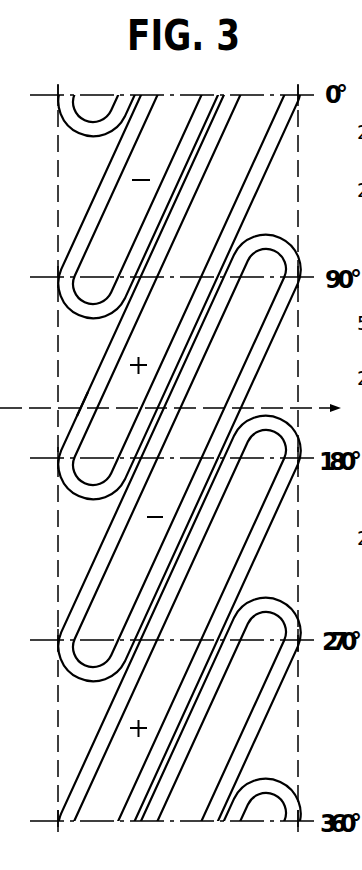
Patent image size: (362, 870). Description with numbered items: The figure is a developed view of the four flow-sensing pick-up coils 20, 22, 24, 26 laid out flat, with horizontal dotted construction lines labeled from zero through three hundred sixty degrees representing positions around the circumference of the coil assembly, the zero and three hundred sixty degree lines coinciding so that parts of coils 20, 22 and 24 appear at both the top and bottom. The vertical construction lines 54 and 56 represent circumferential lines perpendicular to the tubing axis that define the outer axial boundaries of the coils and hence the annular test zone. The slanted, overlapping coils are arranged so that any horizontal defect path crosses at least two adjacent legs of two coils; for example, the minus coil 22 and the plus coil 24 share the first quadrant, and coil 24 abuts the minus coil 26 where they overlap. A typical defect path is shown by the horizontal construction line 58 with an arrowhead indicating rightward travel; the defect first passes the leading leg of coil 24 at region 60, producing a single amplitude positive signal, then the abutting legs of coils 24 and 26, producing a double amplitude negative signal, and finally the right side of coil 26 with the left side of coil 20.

The pick-up coil 20 is at (68, 117).
The minus coil 22 is at (95, 197).
The plus coil 24 is at (103, 362).
The minus coil 26 is at (107, 539).
The vertical construction line 54 is at (57, 320).
The vertical construction line 56 is at (300, 357).
The horizontal construction line 58 is at (40, 408).
The region 60 is at (88, 405).